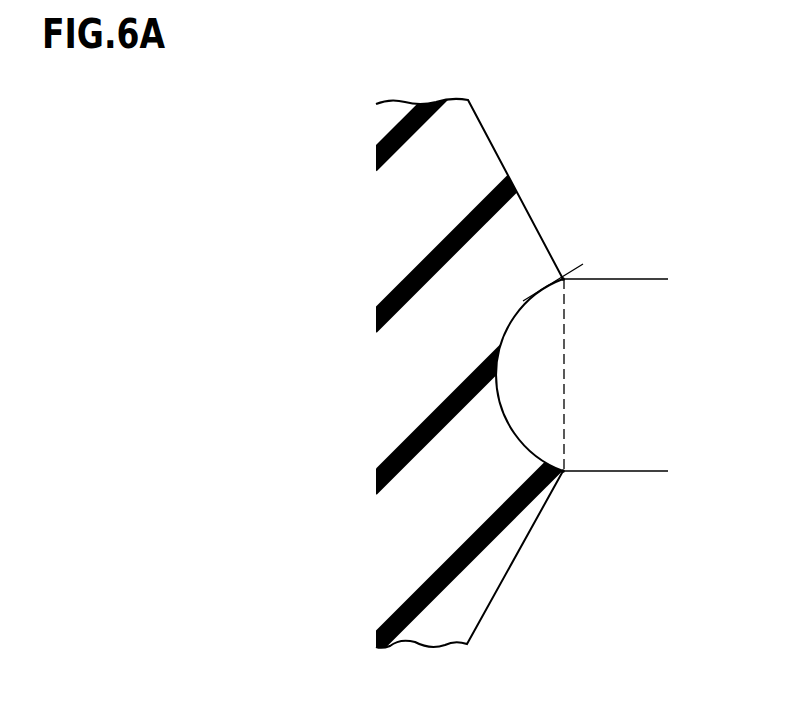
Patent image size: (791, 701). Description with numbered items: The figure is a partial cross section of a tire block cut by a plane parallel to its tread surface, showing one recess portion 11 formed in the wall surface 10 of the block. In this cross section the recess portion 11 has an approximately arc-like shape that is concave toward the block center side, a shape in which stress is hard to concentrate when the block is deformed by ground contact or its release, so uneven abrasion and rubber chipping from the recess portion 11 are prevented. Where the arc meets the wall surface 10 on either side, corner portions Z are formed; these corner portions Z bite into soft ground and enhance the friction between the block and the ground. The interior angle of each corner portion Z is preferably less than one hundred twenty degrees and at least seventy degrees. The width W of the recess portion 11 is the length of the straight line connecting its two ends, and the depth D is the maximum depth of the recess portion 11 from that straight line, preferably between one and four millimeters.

The wall surface 10 is at (525, 207).
The recess portion 11 is at (550, 328).
The corner portions Z is at (566, 269).
The width W is at (663, 279).
The depth D is at (497, 375).